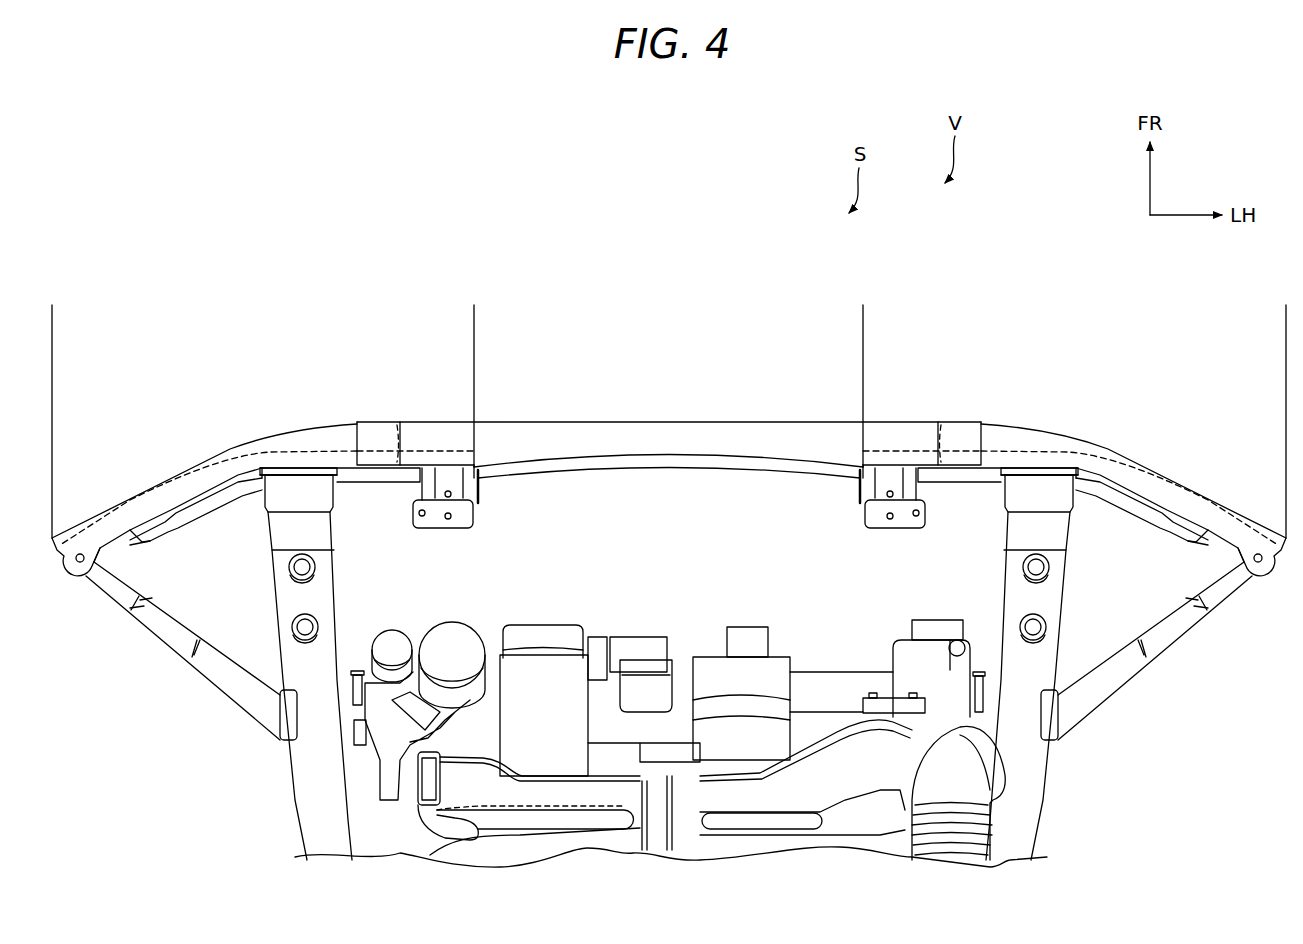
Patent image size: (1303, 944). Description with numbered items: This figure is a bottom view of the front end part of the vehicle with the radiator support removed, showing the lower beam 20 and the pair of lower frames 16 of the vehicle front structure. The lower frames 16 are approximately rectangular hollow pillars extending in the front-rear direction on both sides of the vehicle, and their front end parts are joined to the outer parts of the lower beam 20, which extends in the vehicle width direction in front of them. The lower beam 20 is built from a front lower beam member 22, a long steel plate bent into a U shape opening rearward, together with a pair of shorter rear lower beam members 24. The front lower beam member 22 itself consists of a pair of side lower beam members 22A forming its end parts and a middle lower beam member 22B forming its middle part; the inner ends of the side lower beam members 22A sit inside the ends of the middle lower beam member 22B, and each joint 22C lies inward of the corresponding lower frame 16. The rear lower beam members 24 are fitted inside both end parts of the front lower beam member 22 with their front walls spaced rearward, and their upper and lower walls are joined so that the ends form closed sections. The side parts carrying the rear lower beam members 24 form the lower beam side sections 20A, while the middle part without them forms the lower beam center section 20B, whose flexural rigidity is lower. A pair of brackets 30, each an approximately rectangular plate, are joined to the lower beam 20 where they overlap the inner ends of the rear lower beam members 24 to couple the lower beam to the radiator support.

The lower frame 16 is at (297, 816).
The lower beam 20 is at (247, 266).
The lower beam side section 20A is at (52, 308).
The lower beam center section 20B is at (474, 308).
The front lower beam member 22 is at (568, 421).
The side lower beam member 22A is at (213, 456).
The middle lower beam member 22B is at (678, 421).
The joint 22C is at (372, 445).
The rear lower beam member 24 is at (360, 484).
The bracket 30 is at (440, 530).